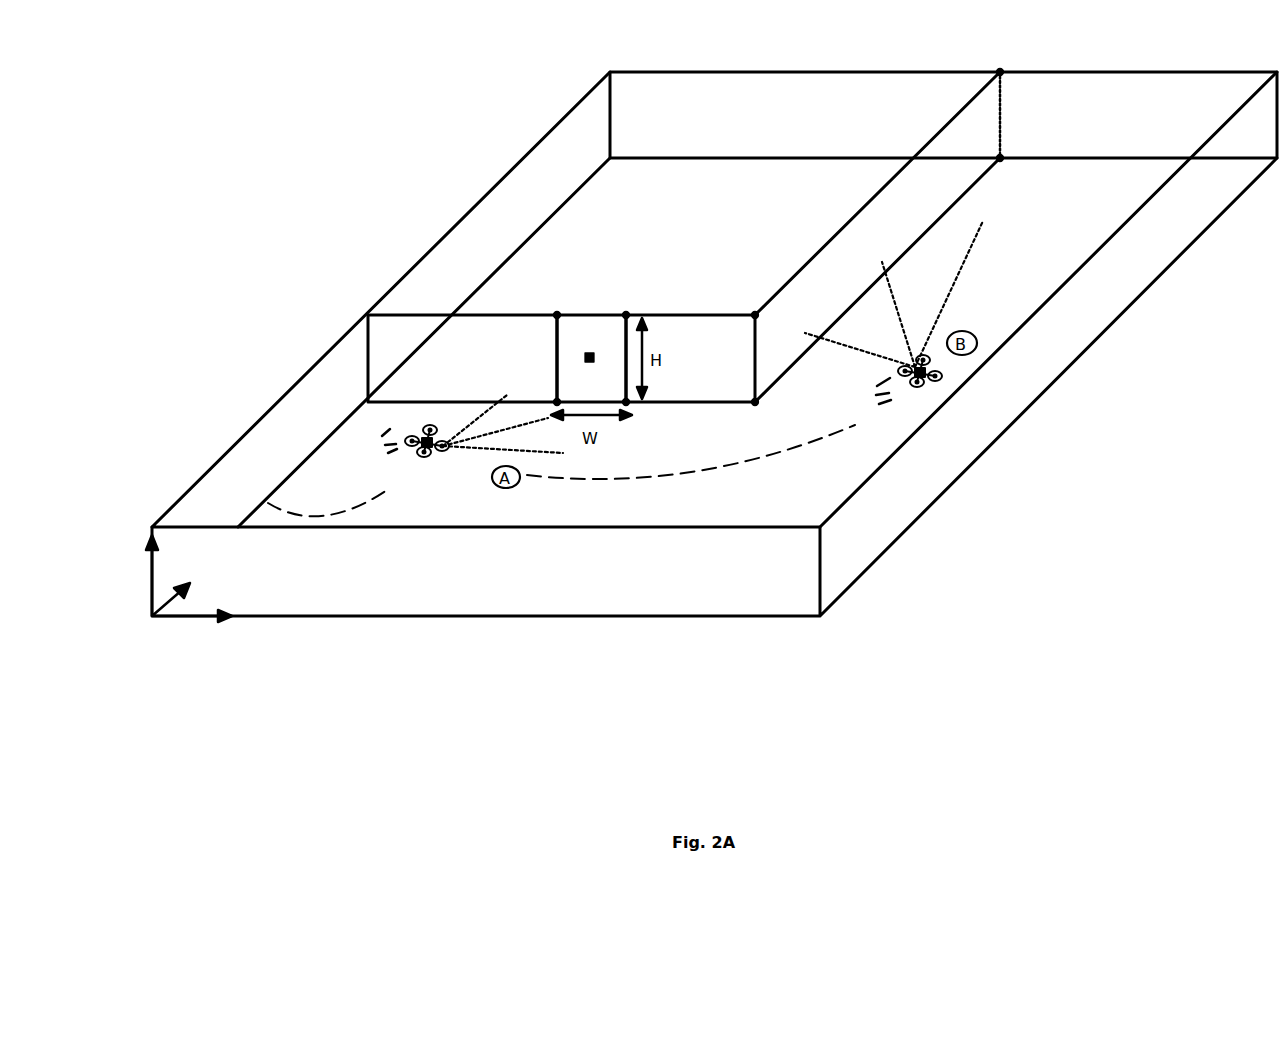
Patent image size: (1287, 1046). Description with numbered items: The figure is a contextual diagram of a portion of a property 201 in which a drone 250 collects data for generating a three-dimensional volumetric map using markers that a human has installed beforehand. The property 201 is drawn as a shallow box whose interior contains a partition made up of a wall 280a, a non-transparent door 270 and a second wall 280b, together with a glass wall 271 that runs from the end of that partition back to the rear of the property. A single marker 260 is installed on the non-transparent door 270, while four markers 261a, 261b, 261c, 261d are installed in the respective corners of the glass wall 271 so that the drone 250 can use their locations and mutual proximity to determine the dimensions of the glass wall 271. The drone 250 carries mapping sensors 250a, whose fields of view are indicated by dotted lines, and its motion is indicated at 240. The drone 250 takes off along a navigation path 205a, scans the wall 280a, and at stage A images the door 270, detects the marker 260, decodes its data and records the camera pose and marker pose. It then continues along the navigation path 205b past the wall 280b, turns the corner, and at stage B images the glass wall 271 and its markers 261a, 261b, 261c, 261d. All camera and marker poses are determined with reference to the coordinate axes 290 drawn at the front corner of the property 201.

The property 201 is at (438, 112).
The flight path segment 205a is at (313, 512).
The navigation path 205b is at (657, 478).
The propeller motion 240 is at (370, 448).
The drone 250 is at (407, 452).
The mapping sensors 250a is at (430, 458).
The marker 260 is at (596, 360).
The non-transparent door 270 is at (598, 323).
The glass wall 271 is at (866, 220).
The wall 280a is at (498, 327).
The wall 280b is at (676, 328).
The marker 261a is at (764, 320).
The marker 261b is at (766, 376).
The marker 261c is at (990, 152).
The marker 261d is at (990, 100).
The coordinate axes 290 is at (152, 622).